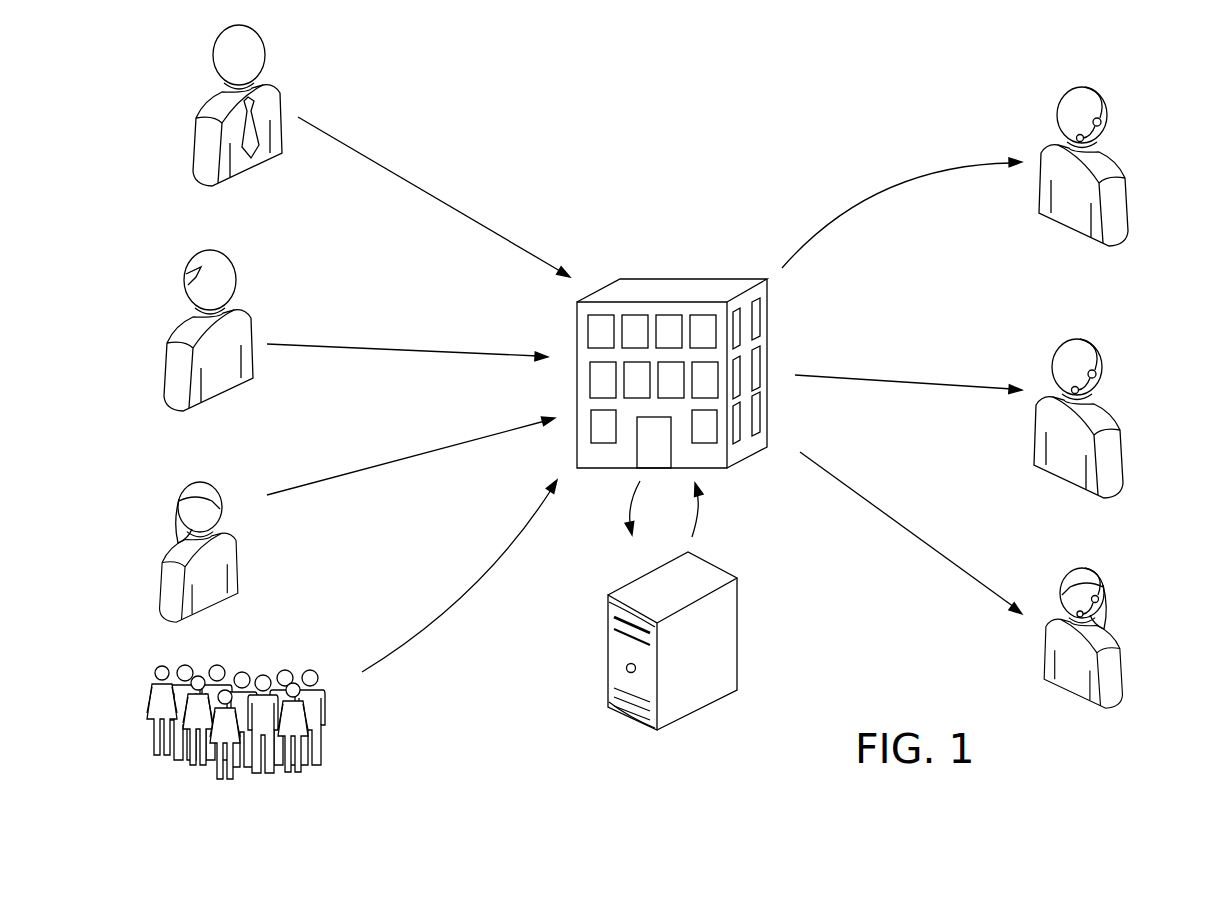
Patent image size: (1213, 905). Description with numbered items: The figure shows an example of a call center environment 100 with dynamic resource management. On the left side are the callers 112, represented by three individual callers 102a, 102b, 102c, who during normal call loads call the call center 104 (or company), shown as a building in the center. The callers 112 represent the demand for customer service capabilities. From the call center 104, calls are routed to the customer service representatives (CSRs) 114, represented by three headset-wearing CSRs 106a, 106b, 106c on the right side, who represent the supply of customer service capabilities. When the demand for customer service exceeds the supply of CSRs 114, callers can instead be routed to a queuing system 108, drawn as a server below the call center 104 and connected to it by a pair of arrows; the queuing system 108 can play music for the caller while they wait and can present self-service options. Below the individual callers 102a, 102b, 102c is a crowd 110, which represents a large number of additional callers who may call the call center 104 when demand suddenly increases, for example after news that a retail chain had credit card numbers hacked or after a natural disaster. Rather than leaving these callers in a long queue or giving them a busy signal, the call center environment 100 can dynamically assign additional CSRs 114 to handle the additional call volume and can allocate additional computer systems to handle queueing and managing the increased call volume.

The call center environment 100 is at (918, 80).
The individual caller 102a is at (332, 103).
The individual caller 102b is at (282, 280).
The individual caller 102c is at (223, 492).
The call center 104 is at (650, 280).
The customer service representative 106a is at (1123, 112).
The customer service representative 106b is at (1118, 337).
The customer service representative 106c is at (1130, 568).
The queuing system 108 is at (739, 615).
The crowd 110 is at (313, 658).
The callers 112 is at (527, 133).
The customer service representatives 114 is at (815, 147).